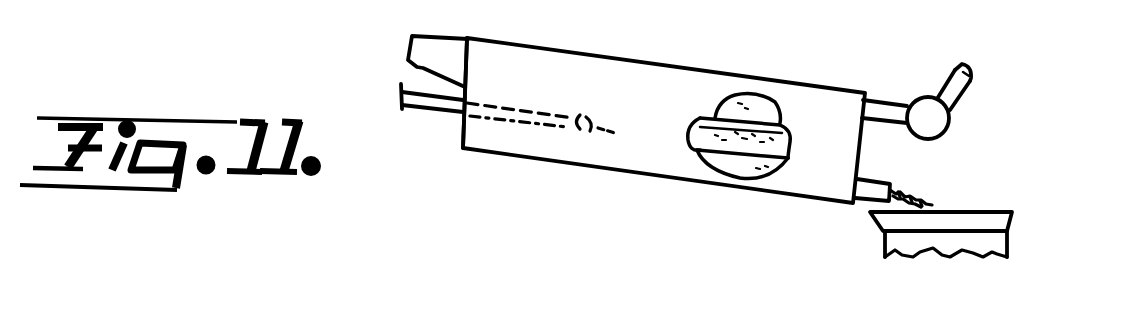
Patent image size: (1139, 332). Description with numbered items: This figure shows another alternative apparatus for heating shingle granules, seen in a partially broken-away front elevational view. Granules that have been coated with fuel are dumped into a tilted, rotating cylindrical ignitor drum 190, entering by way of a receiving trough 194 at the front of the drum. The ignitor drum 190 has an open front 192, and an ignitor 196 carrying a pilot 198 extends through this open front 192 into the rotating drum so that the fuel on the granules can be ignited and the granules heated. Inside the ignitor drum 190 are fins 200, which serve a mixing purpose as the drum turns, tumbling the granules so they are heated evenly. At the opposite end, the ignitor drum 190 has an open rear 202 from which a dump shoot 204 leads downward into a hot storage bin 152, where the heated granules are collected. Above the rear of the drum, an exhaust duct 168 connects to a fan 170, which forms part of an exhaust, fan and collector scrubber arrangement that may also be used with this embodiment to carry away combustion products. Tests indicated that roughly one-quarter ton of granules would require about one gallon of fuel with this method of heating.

The hot storage bin 152 is at (1017, 215).
The exhaust duct 168 is at (885, 101).
The fan 170 is at (938, 128).
The ignitor drum 190 is at (485, 152).
The open front 192 is at (461, 132).
The receiving trough 194 is at (408, 65).
The ignitor 196 is at (436, 111).
The pilot 198 is at (578, 138).
The fins 200 is at (705, 133).
The open rear 202 is at (862, 147).
The dump shoot 204 is at (858, 200).